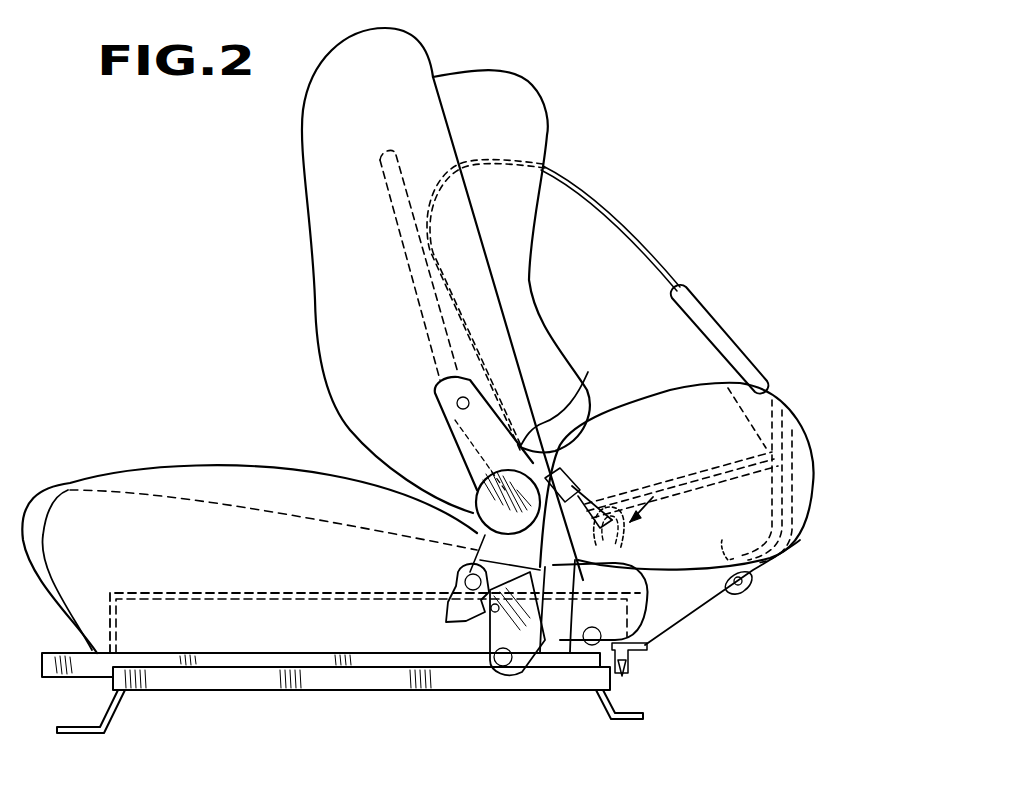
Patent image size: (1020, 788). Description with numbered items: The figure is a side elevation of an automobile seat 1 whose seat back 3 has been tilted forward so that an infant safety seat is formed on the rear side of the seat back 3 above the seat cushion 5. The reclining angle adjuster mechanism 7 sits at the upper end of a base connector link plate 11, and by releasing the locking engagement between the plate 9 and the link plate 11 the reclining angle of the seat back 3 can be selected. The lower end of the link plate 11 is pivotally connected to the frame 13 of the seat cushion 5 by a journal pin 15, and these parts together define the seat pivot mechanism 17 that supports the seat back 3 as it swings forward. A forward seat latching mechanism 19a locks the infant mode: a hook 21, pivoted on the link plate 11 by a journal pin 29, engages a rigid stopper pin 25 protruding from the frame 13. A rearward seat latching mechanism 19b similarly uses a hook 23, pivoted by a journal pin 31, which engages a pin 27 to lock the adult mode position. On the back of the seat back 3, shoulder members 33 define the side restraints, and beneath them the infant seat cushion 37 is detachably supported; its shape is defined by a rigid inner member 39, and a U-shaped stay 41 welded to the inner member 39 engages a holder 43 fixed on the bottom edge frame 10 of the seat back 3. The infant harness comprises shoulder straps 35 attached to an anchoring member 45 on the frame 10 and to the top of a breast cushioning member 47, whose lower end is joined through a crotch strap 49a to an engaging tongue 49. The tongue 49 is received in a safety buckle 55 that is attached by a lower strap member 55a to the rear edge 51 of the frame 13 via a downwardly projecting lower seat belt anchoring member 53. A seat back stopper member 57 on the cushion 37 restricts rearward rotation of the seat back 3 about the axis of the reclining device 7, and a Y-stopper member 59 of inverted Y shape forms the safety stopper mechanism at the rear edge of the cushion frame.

The automobile seat 1 is at (533, 72).
The seat back 3 is at (307, 191).
The seat cushion 5 is at (125, 472).
The reclining angle adjuster mechanism 7 is at (463, 477).
The plate 9 is at (457, 430).
The seat back frame 10 is at (418, 299).
The base connector link plate 11 is at (513, 655).
The seat cushion frame 13 is at (238, 625).
The journal pin 15 is at (500, 668).
The seat pivot mechanism 17 is at (547, 660).
The forward seat latching mechanism 19a is at (400, 735).
The rearward seat latching mechanism 19b is at (650, 762).
The hook 21 is at (420, 640).
The hook 23 is at (573, 667).
The stopper pin 25 is at (420, 607).
The stopper pin 27 is at (593, 673).
The journal pin 29 is at (500, 627).
The journal pin 31 is at (525, 573).
The shoulder members 33 is at (544, 250).
The shoulder straps 35 is at (660, 259).
The infant seat cushion 37 is at (795, 407).
The inner member 39 is at (790, 448).
The U-shaped stay 41 is at (583, 510).
The holder 43 is at (557, 492).
The anchoring member 45 is at (571, 399).
The breast cushioning member 47 is at (735, 343).
The engaging tongue 49 is at (800, 548).
The crotch strap 49a is at (800, 495).
The rear edge 51 is at (647, 610).
The lower seat belt anchoring member 53 is at (628, 660).
The safety buckle 55 is at (760, 577).
The lower strap member 55a is at (707, 605).
The seat back stopper member 57 is at (653, 497).
The Y-stopper member 59 is at (620, 543).